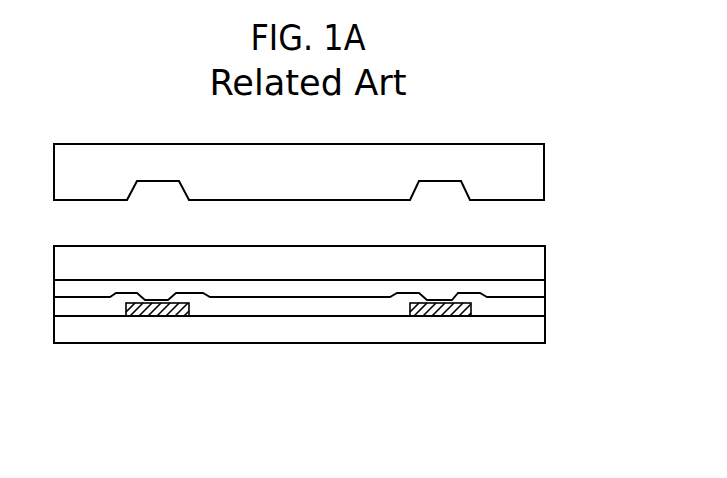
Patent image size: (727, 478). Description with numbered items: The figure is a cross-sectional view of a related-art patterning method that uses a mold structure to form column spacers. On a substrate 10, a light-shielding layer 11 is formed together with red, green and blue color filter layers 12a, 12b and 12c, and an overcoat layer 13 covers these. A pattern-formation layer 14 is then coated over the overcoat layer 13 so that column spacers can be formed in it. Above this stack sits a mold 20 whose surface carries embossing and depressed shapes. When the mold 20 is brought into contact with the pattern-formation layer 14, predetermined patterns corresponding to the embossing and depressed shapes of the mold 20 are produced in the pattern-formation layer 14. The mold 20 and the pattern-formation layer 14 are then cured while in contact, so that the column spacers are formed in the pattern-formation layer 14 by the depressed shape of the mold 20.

The mold 20 is at (526, 170).
The pattern-formation layer 14 is at (525, 264).
The overcoat layer 13 is at (525, 291).
The red color filter layer 12a is at (88, 307).
The green color filter layer 12b is at (259, 309).
The blue color filter layer 12c is at (505, 307).
The light-shielding layer 11 is at (168, 307).
The substrate 10 is at (323, 329).